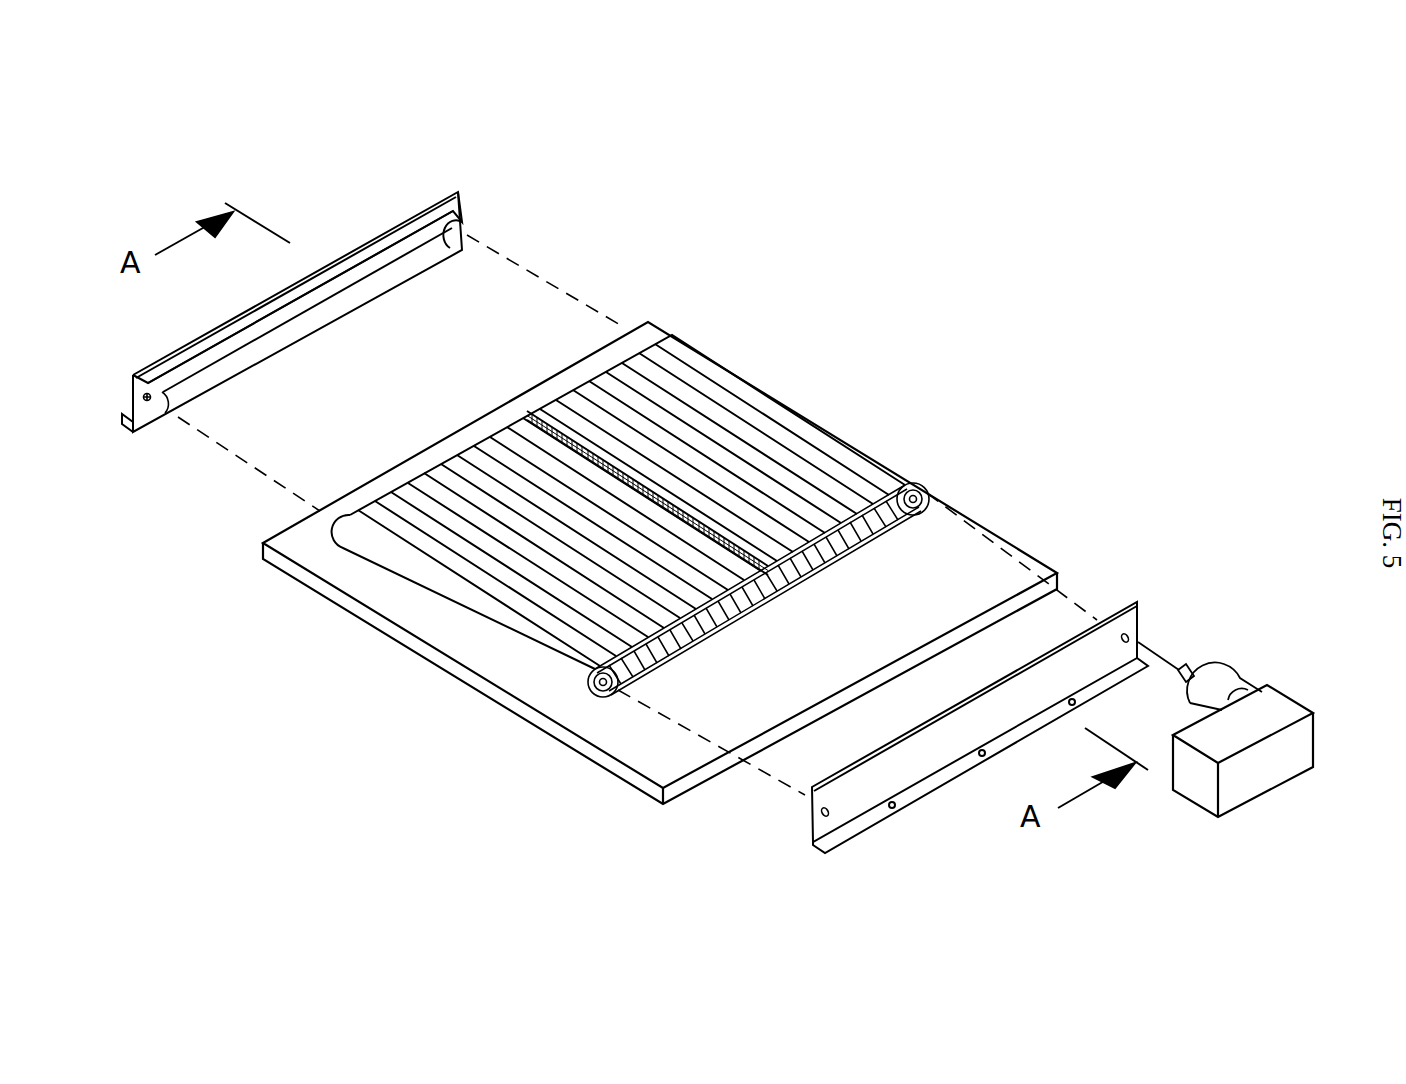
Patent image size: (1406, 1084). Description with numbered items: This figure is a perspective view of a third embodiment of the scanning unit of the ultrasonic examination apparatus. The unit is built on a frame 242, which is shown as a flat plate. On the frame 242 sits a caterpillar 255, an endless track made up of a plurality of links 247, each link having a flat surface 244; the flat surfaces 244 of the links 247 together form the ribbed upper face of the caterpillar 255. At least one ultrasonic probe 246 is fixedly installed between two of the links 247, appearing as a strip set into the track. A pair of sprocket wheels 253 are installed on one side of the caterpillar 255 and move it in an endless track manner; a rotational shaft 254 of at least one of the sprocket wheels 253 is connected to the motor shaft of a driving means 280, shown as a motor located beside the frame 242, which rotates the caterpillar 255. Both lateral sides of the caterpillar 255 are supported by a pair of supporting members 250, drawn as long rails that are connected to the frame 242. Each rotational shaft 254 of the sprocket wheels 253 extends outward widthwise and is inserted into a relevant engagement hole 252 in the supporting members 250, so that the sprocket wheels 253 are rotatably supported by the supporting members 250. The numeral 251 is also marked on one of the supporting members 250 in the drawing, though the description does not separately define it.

The frame 242 is at (473, 660).
The flat surface 244 is at (714, 400).
The ultrasonic probe 246 is at (527, 413).
The link 247 is at (547, 410).
The supporting member 250 is at (364, 290).
The side rail 251 is at (387, 257).
The engagement hole 252 is at (163, 412).
The sprocket wheel 253 is at (929, 488).
The rotational shaft 254 is at (610, 695).
The caterpillar 255 is at (845, 412).
The driving means 280 is at (1265, 700).